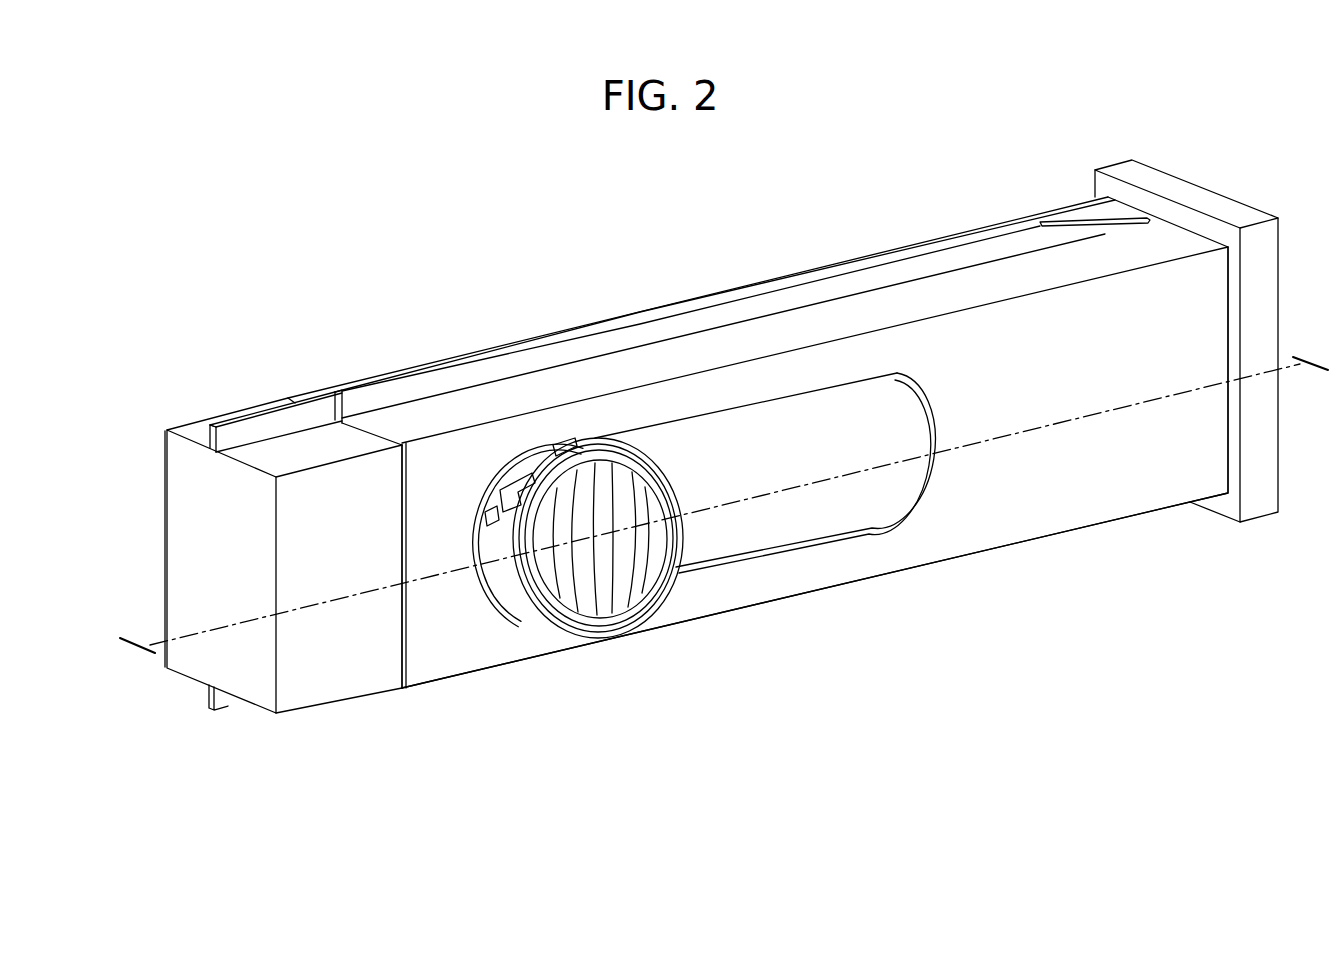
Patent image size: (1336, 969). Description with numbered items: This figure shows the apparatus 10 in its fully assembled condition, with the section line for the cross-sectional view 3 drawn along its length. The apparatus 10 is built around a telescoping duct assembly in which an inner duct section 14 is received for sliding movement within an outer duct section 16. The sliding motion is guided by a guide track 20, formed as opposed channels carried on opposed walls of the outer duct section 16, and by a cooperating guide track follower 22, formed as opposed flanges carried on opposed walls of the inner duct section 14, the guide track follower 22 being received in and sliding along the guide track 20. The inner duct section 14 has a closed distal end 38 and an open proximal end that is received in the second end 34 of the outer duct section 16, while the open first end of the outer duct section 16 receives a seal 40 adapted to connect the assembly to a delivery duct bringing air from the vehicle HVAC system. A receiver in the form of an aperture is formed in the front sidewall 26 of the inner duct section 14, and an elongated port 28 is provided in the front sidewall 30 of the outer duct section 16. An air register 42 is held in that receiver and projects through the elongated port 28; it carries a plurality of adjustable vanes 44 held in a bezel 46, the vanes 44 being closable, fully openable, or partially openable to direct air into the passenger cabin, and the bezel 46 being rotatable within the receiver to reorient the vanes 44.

The apparatus 10 is at (362, 233).
The inner duct section 14 is at (313, 675).
The outer duct section 16 is at (757, 240).
The guide track 20 is at (390, 390).
The guide track follower 22 is at (256, 421).
The front sidewall 26 is at (817, 508).
The elongated port 28 is at (830, 382).
The front sidewall 30 is at (1082, 475).
The second end 34 is at (403, 505).
The closed distal end 38 is at (190, 500).
The seal 40 is at (1205, 188).
The air register 42 is at (520, 613).
The adjustable vanes 44 is at (628, 563).
The bezel 46 is at (647, 602).
The section line 3- 3 is at (136, 640).